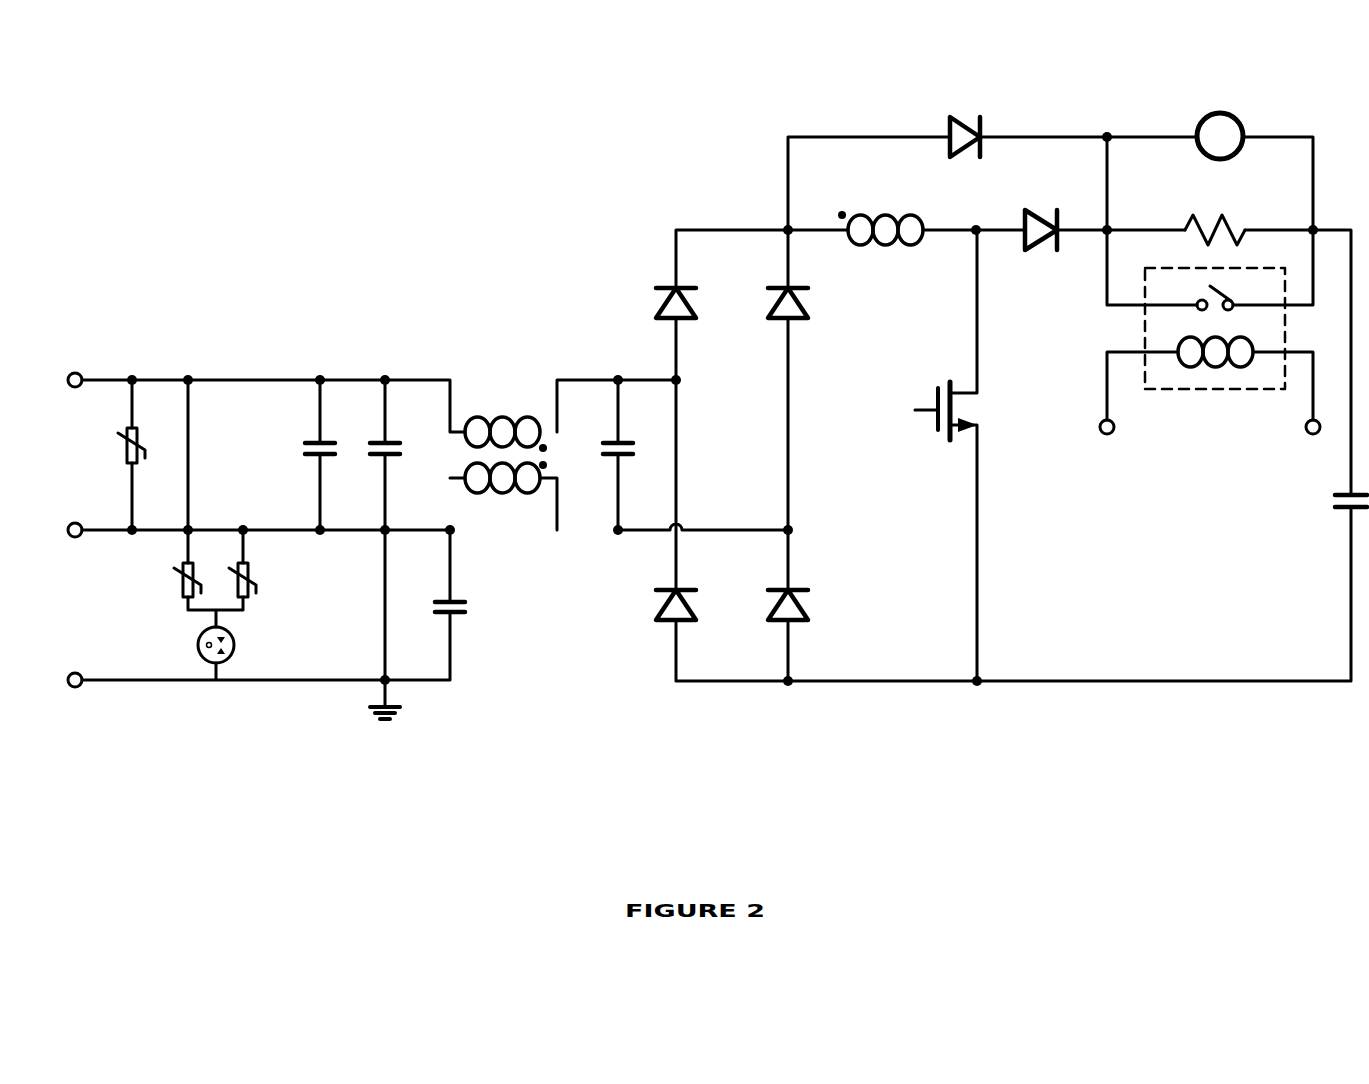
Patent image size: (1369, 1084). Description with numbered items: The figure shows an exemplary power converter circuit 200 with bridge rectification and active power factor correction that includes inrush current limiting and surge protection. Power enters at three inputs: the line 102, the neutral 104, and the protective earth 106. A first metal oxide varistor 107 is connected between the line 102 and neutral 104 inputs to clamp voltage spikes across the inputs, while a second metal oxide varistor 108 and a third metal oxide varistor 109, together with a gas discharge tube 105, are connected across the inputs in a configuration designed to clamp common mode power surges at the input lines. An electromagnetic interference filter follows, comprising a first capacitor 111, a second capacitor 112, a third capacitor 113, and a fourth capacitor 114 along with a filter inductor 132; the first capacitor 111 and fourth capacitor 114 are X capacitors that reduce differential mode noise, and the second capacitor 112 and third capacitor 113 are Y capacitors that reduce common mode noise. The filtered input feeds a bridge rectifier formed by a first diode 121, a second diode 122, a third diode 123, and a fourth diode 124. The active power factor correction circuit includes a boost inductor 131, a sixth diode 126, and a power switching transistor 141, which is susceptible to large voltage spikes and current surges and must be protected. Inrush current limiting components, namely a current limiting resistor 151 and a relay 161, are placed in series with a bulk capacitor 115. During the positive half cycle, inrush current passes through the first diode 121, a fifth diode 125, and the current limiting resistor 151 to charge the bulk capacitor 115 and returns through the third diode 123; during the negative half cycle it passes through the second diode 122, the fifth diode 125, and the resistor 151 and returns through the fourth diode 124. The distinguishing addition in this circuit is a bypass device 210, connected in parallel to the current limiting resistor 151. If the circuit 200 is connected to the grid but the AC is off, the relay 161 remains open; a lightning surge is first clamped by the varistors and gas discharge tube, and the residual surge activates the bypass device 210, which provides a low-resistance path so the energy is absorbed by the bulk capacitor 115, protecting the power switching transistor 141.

The power converter circuit 200 is at (512, 150).
The line 102 is at (78, 377).
The neutral 104 is at (78, 527).
The protective earth 106 is at (77, 677).
The metal oxide varistor MOV1 107 is at (110, 446).
The metal oxide varistor MOV2 108 is at (164, 580).
The metal oxide varistor MOV3 109 is at (266, 580).
The gas discharge tube GDT1 105 is at (236, 648).
The capacitor C1 111 is at (309, 450).
The capacitor C2 112 is at (374, 450).
The capacitor C3 113 is at (440, 609).
The capacitor C4 114 is at (608, 450).
The bulk capacitor C5 115 is at (1341, 505).
The diode D1 121 is at (668, 307).
The diode D2 122 is at (780, 307).
The diode D3 123 is at (780, 607).
The diode D4 124 is at (668, 607).
The diode D5 125 is at (946, 138).
The diode D6 126 is at (1041, 231).
The inductor L1 131 is at (885, 229).
The inductor L2 132 is at (485, 470).
The power switching transistor Q1 141 is at (952, 413).
The current limiting resistor R1 151 is at (1211, 225).
The relay K1 161 is at (1210, 351).
The bypass device BD1 210 is at (1221, 135).